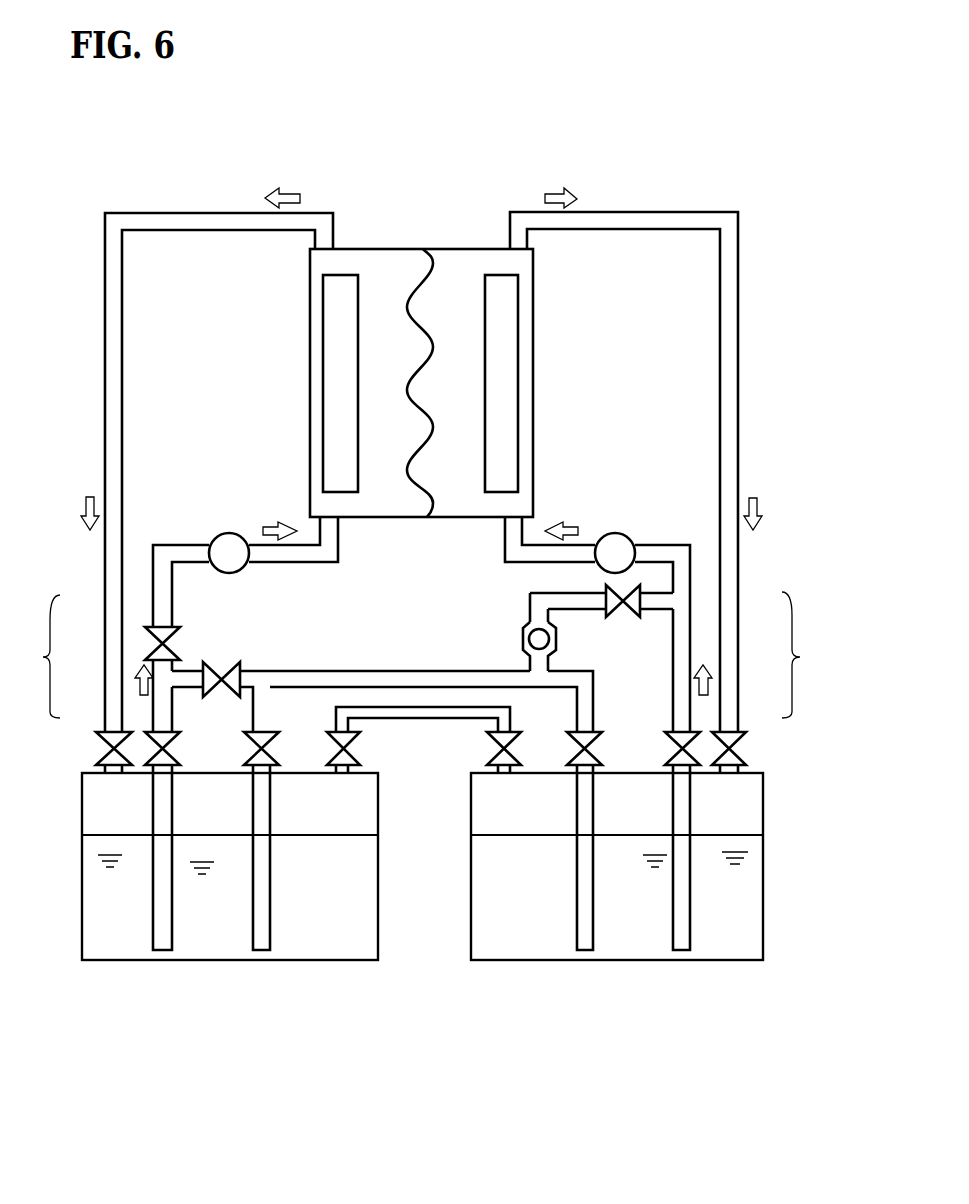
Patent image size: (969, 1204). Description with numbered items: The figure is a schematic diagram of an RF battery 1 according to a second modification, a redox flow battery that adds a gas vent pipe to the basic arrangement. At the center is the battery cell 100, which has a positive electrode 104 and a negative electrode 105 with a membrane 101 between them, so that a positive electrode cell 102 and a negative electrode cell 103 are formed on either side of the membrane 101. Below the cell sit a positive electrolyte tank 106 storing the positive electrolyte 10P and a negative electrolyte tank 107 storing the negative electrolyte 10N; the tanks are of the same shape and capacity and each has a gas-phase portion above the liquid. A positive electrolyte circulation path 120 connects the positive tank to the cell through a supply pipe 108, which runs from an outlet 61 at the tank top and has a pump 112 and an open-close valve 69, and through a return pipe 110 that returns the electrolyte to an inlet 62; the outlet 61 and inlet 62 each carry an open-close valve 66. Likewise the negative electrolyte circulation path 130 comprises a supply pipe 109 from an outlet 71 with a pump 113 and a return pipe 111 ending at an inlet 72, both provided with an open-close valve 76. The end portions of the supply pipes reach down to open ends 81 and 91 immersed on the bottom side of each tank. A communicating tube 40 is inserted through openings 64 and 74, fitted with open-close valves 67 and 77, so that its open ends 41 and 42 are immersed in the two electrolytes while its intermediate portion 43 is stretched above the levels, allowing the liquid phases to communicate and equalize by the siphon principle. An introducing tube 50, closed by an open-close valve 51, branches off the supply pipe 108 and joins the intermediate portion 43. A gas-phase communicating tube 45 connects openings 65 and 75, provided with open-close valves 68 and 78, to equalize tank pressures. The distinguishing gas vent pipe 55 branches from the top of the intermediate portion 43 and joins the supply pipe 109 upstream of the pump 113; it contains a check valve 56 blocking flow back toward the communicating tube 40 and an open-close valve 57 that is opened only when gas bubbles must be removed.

The RF battery 1 is at (108, 187).
The battery cell 100 is at (427, 236).
The membrane 101 is at (424, 497).
The positive electrode cell 102 is at (372, 503).
The negative electrode cell 103 is at (480, 497).
The positive electrode 104 is at (330, 352).
The negative electrode 105 is at (512, 352).
The positive electrolyte 10P is at (90, 858).
The negative electrolyte 10N is at (745, 865).
The positive electrolyte tank 106 is at (212, 965).
The negative electrolyte tank 107 is at (635, 965).
The supply pipe 108 is at (162, 704).
The supply pipe 109 is at (682, 703).
The return pipe 110 is at (118, 650).
The return pipe 111 is at (724, 647).
The pump 112 is at (229, 533).
The pump 113 is at (613, 533).
The positive electrolyte circulation path 120 is at (32, 656).
The negative electrolyte circulation path 130 is at (811, 655).
The communicating tube 40 is at (342, 668).
The intermediate portion 43 is at (414, 688).
The gas-phase communicating tube 45 is at (418, 718).
The introducing tube 50 is at (188, 676).
The open-close valve 51 is at (222, 668).
The gas vent pipe 55 is at (546, 612).
The check valve 56 is at (527, 640).
The open-close valve 57 is at (624, 614).
The outlet 61 is at (162, 783).
The inlet 62 is at (118, 778).
The opening 64 is at (265, 780).
The opening 65 is at (343, 778).
The open-close valve 66 is at (105, 740).
The open-close valve 67 is at (268, 748).
The open-close valve 68 is at (350, 740).
The open-close valve 69 is at (168, 627).
The outlet 71 is at (685, 780).
The inlet 72 is at (735, 777).
The opening 74 is at (585, 780).
The opening 75 is at (503, 778).
The open-close valve 76 is at (672, 742).
The open-close valve 77 is at (578, 748).
The open-close valve 78 is at (497, 742).
The open end 81 is at (160, 952).
The open end 91 is at (688, 952).
The open end 41 is at (267, 952).
The open end 42 is at (583, 952).